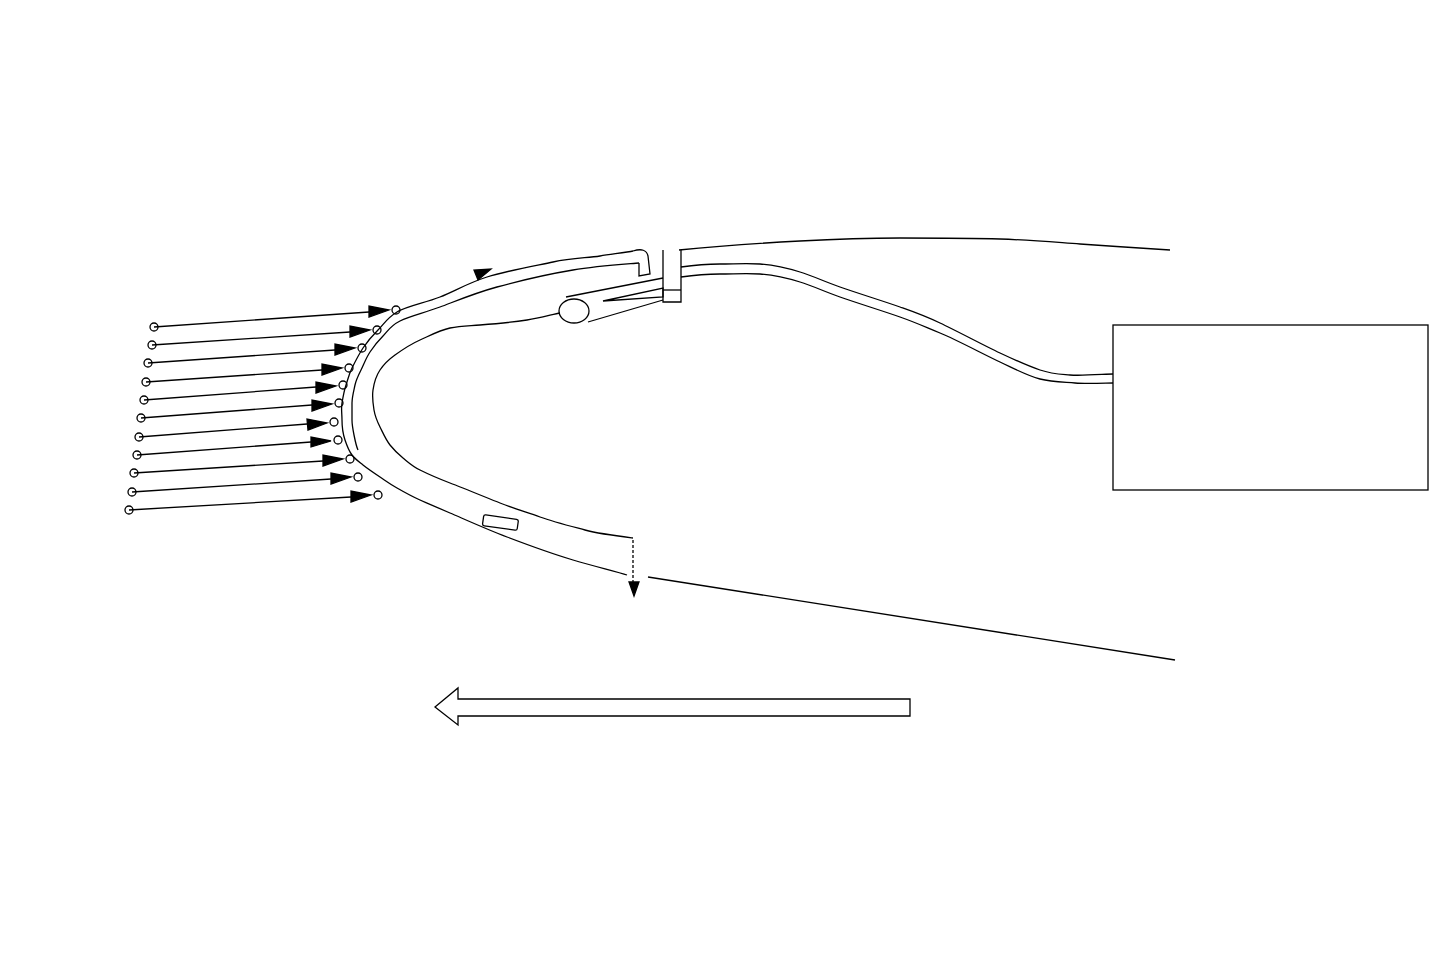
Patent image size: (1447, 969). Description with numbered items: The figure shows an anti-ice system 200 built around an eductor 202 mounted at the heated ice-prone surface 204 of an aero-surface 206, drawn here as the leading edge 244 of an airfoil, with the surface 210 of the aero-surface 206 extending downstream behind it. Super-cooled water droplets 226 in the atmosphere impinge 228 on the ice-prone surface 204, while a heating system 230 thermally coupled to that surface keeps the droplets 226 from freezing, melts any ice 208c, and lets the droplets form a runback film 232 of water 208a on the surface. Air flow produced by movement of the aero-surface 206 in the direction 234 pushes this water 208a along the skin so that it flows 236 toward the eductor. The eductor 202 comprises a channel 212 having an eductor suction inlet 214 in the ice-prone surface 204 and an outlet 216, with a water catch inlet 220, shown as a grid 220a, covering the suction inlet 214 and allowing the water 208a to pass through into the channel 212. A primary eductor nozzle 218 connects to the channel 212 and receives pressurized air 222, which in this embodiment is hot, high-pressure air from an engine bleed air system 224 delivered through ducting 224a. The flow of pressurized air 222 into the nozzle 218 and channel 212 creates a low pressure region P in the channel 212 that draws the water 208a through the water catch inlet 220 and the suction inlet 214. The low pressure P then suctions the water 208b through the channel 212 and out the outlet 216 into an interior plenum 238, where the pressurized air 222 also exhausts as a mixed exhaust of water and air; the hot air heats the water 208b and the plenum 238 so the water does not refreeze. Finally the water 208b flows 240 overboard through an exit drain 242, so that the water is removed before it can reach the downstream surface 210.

The anti-ice system 200 is at (165, 106).
The eductor 202 is at (705, 358).
The heated ice-prone surface 204 is at (443, 562).
The aero-surface 206 is at (1078, 228).
The water 208a is at (494, 275).
The water 208b is at (571, 325).
The ice 208c is at (570, 258).
The surface 210 is at (948, 238).
The channel 212 is at (622, 322).
The eductor suction inlet 214 is at (654, 222).
The outlet 216 is at (578, 327).
The primary eductor nozzle 218 is at (672, 295).
The water catch inlet 220 is at (680, 225).
The grid 220a is at (655, 248).
The pressurized air 222 is at (977, 348).
The engine bleed air system 224 is at (1328, 325).
The ducting 224a is at (870, 308).
The super-cooled water droplets 226 is at (228, 377).
The impinge 228 is at (238, 318).
The heating system 230 is at (500, 528).
The runback film 232 is at (527, 268).
The direction 234 is at (543, 716).
The flows 236 is at (415, 300).
The interior plenum 238 is at (476, 442).
The flows 240 is at (410, 475).
The exit drain 242 is at (625, 578).
The leading edge 244 is at (280, 556).
The low pressure region P is at (680, 265).